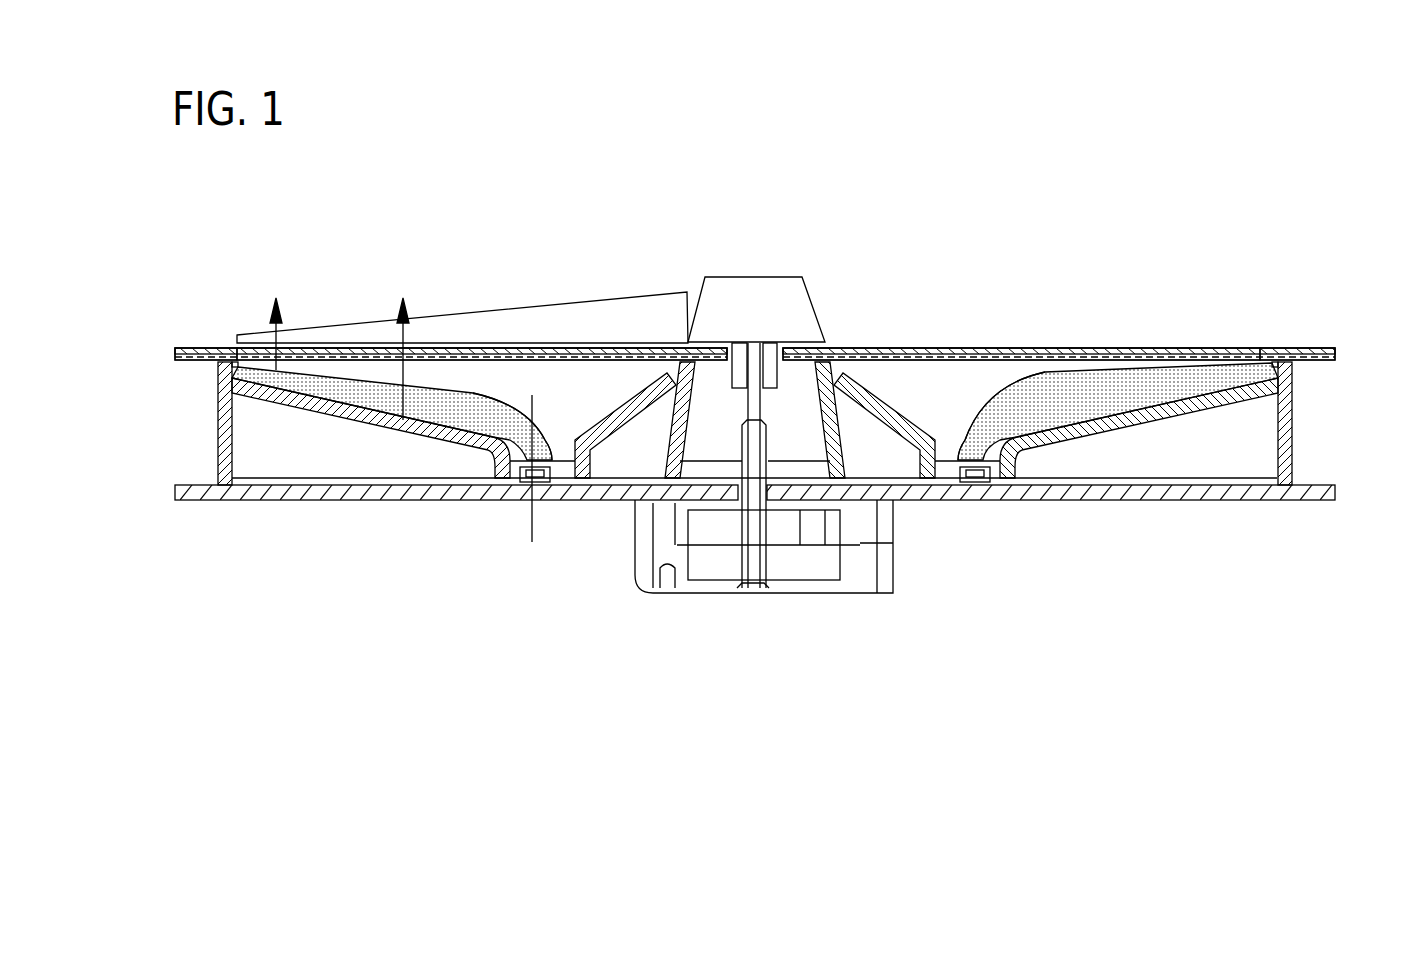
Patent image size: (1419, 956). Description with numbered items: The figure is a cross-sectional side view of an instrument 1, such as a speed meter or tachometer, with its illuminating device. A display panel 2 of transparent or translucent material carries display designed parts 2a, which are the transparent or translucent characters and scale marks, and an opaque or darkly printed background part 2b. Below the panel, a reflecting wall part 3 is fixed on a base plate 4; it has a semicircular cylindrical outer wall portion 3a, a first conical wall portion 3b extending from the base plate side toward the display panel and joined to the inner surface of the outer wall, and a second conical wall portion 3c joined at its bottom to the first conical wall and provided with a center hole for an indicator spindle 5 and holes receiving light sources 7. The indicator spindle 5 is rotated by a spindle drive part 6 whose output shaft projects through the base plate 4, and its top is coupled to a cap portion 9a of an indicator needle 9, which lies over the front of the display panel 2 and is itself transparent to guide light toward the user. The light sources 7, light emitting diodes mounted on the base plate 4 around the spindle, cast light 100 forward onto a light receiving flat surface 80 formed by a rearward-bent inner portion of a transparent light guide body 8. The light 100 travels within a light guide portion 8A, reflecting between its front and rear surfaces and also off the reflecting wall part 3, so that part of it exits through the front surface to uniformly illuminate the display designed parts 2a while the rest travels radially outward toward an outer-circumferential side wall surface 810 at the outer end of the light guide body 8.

The instrument 1 is at (1120, 214).
The display panel 2 is at (968, 348).
The display designed parts 2a is at (272, 348).
The background part 2b is at (212, 349).
The reflecting wall part 3 is at (756, 479).
The outer wall portion 3a is at (218, 398).
The first conical wall portion 3b is at (355, 420).
The second conical wall portion 3c is at (603, 442).
The base plate 4 is at (1195, 500).
The indicator spindle 5 is at (760, 407).
The spindle drive part 6 is at (867, 595).
The light sources 7 is at (527, 490).
The light guide body 8 is at (499, 395).
The light guide portion 8A is at (450, 390).
The indicator needle 9 is at (638, 296).
The cap portion 9a is at (775, 277).
The light receiving flat surface 80 is at (540, 480).
The light 100 is at (296, 336).
The outer-circumferential side wall surface 810 is at (232, 365).